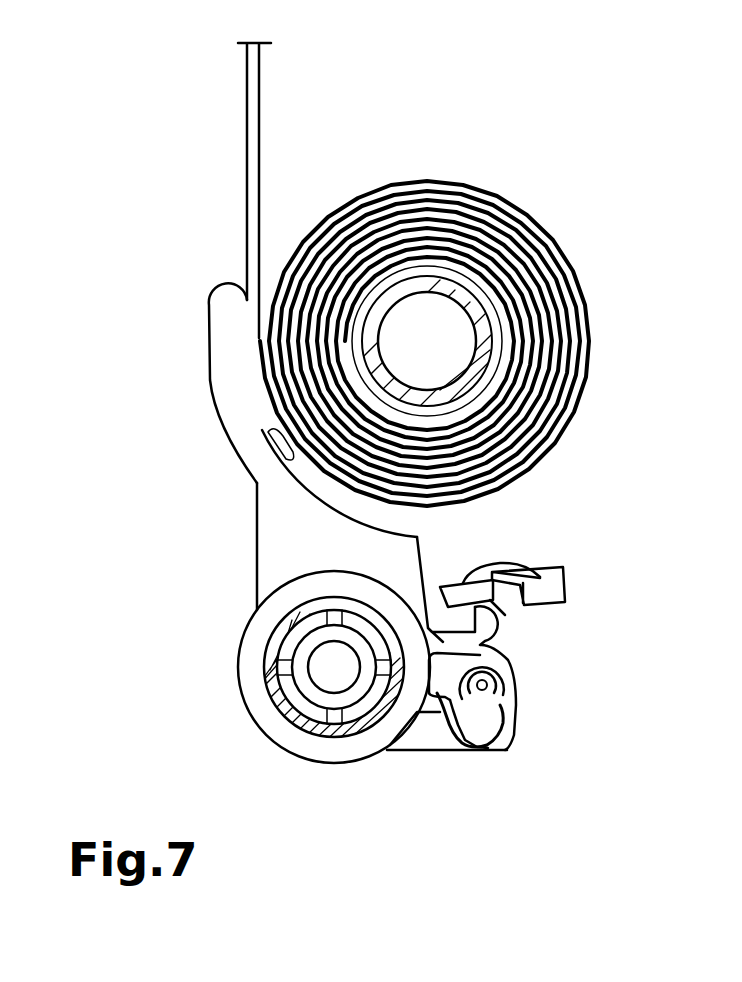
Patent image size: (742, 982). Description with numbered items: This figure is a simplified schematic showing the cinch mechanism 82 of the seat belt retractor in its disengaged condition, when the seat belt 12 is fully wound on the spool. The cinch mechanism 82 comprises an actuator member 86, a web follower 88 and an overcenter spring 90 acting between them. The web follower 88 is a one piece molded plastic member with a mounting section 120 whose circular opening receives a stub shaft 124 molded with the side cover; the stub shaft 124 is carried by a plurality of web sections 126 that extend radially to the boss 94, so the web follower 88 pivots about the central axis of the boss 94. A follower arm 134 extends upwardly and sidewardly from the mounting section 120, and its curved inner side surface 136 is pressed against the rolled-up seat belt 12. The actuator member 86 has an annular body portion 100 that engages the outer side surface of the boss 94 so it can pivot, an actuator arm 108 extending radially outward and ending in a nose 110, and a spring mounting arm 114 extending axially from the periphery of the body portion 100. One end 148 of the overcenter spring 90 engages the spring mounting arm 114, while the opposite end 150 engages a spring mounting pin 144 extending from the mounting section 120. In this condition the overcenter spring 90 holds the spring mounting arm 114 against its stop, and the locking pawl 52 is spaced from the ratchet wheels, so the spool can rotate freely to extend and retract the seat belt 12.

The seat belt 12 is at (253, 104).
The follower arm 134 is at (230, 306).
The curved inner side surface 136 is at (290, 450).
The web follower 88 is at (256, 516).
The mounting section 120 is at (317, 542).
The actuator arm 108 is at (427, 630).
The annular body portion 100 is at (250, 662).
The cinch mechanism 82 is at (297, 761).
The stub shaft 124 is at (302, 667).
The boss 94 is at (302, 703).
The web sections 126 is at (282, 740).
The actuator member 86 is at (362, 754).
The spring mounting arm 114 is at (437, 713).
The end of overcenter spring 148 is at (447, 720).
The spring mounting pin 144 is at (493, 688).
The opposite end of overcenter spring 150 is at (485, 673).
The overcenter spring 90 is at (499, 753).
The nose 110 is at (487, 628).
The locking pawl 52 is at (470, 560).